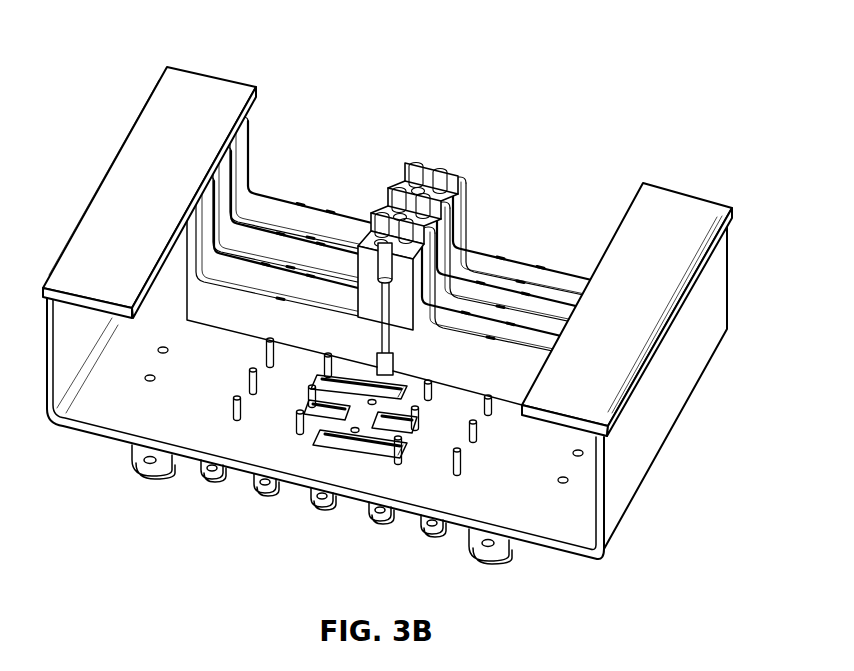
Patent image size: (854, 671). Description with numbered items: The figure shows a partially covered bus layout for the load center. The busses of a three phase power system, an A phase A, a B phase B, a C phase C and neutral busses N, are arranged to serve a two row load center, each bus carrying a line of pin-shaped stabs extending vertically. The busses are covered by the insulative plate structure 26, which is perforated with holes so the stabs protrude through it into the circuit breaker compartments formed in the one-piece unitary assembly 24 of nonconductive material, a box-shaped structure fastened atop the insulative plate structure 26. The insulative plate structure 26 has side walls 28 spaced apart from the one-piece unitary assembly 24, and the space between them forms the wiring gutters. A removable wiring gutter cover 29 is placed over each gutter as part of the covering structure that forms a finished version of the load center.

The one-piece unitary assembly 24 is at (468, 207).
The insulative plate structure 26 is at (568, 550).
The side walls 28 is at (685, 388).
The removable wiring gutter cover 29 is at (205, 90).
The phase A terminal slot A is at (298, 370).
The phase B terminal slot B is at (438, 435).
The phase C terminal slot C is at (424, 471).
The neutral terminal pin N is at (234, 438).